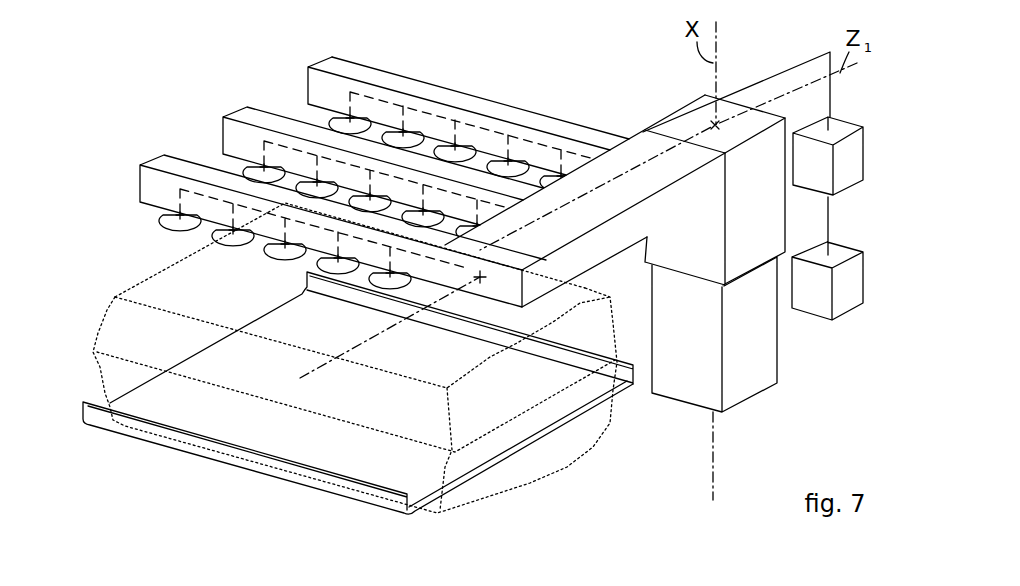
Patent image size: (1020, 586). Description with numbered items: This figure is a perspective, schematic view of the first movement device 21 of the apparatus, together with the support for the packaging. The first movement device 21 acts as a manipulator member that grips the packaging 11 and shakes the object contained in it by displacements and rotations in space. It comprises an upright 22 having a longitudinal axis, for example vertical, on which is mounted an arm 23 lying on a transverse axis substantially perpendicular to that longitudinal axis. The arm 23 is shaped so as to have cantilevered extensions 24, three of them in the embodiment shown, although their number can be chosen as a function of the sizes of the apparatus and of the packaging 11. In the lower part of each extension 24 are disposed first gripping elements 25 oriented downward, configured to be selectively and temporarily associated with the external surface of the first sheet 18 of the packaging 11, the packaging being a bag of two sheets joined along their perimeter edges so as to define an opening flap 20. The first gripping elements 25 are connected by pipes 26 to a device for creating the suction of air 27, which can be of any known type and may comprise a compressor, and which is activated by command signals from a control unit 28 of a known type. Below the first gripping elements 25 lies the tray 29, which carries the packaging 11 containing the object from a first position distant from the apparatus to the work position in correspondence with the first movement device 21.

The packaging 11 is at (117, 368).
The first sheet 18 is at (142, 296).
The opening flap 20 is at (488, 427).
The first movement device 21 is at (556, 113).
The upright 22 is at (762, 366).
The arm 23 is at (603, 242).
The extensions 24 is at (160, 160).
The first gripping elements 25 is at (403, 128).
The pipes 26 is at (178, 200).
The device for creating the suction of air 27 is at (853, 150).
The control unit 28 is at (843, 302).
The tray 29 is at (92, 421).